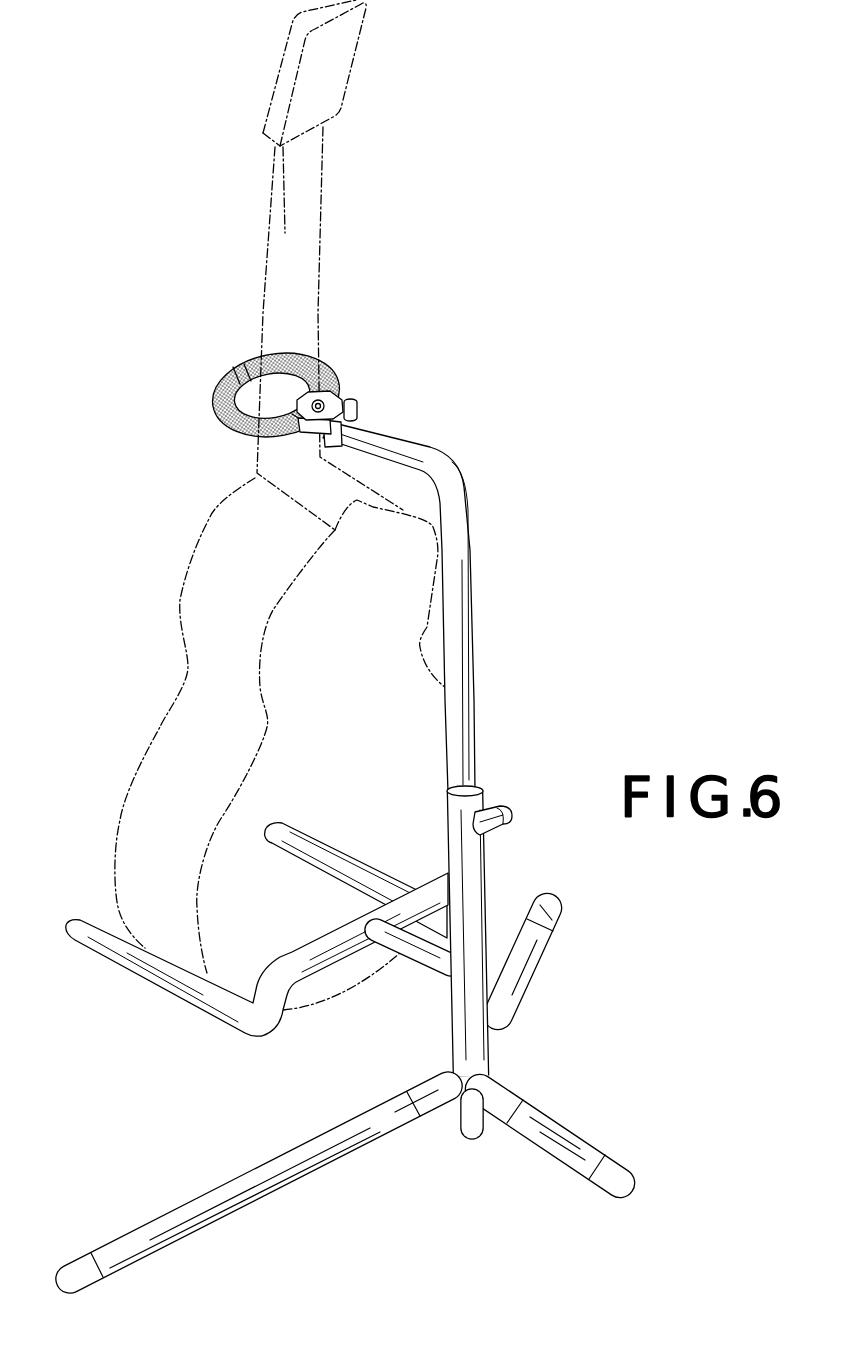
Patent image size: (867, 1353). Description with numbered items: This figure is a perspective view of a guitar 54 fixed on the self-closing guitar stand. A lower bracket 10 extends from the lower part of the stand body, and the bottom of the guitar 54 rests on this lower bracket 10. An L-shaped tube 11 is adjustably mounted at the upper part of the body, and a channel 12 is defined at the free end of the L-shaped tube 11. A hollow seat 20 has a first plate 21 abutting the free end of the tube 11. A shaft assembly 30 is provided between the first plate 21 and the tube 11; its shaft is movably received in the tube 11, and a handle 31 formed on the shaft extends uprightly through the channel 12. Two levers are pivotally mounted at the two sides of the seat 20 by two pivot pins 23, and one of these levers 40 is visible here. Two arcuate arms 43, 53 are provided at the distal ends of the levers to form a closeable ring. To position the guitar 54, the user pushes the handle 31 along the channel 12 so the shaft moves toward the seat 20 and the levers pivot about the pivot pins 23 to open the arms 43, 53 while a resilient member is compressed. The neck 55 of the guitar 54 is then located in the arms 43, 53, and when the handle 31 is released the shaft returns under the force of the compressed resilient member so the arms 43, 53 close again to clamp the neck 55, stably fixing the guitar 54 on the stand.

The lower bracket 10 is at (309, 930).
The L-shaped tube 11 is at (475, 747).
The channel 12 is at (383, 433).
The hollow seat 20 is at (313, 433).
The first plate 21 is at (330, 443).
The pivot pins 23 is at (290, 397).
The shaft assembly 30 is at (368, 395).
The handle 31 is at (358, 407).
The lever 40 is at (310, 435).
The arcuate arm 43 is at (217, 418).
The arcuate arm 53 is at (290, 356).
The guitar 54 is at (157, 748).
The neck 55 is at (313, 353).